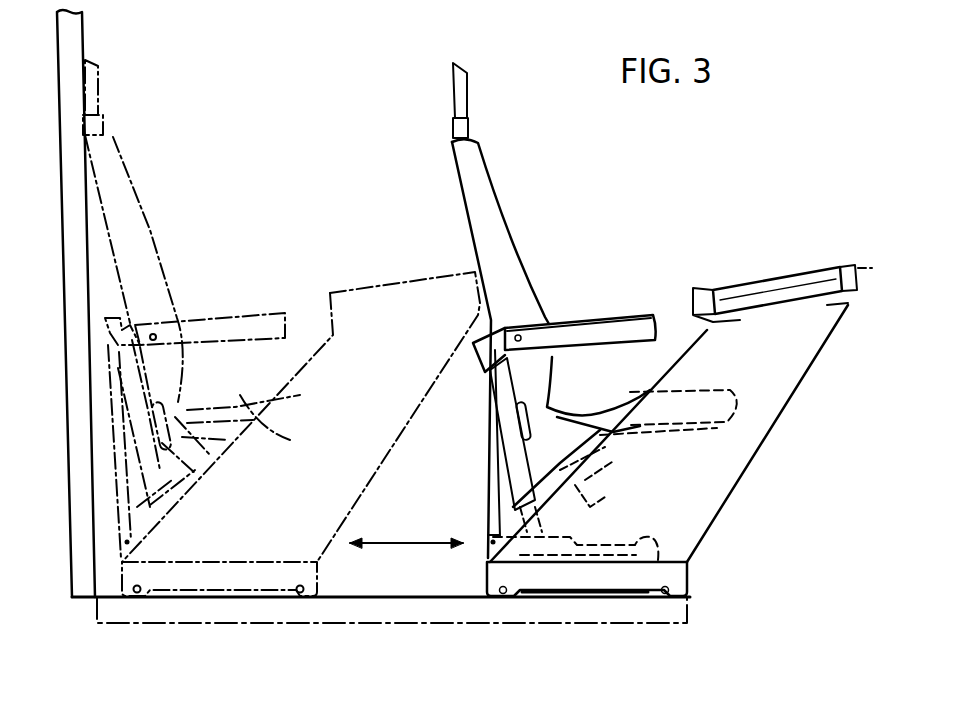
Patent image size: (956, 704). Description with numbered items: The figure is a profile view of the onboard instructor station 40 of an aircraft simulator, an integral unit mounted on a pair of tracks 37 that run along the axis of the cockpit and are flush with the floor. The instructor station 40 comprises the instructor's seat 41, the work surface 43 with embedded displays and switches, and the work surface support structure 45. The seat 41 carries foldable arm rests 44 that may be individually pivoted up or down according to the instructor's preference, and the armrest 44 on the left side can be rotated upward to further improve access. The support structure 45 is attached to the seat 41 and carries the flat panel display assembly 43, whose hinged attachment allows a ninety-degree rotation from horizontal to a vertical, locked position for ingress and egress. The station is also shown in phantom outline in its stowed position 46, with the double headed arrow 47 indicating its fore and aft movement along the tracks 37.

The track 37 is at (438, 598).
The instructor station 40 is at (644, 279).
The instructor's seat 41 is at (458, 185).
The work surface 43 is at (777, 273).
The foldable arm rests 44 is at (608, 315).
The work surface support structure 45 is at (788, 406).
The stowed position 46 is at (188, 285).
The double headed arrow 47 is at (403, 538).